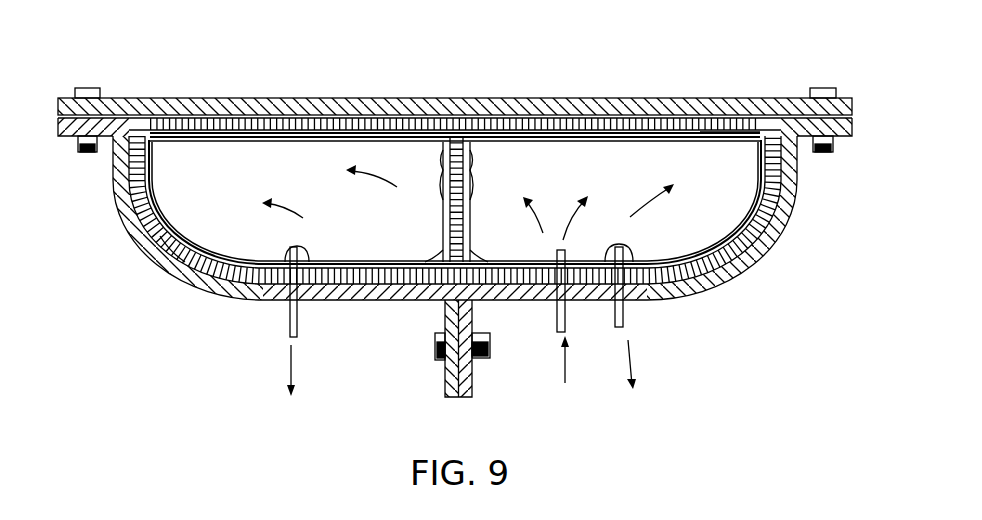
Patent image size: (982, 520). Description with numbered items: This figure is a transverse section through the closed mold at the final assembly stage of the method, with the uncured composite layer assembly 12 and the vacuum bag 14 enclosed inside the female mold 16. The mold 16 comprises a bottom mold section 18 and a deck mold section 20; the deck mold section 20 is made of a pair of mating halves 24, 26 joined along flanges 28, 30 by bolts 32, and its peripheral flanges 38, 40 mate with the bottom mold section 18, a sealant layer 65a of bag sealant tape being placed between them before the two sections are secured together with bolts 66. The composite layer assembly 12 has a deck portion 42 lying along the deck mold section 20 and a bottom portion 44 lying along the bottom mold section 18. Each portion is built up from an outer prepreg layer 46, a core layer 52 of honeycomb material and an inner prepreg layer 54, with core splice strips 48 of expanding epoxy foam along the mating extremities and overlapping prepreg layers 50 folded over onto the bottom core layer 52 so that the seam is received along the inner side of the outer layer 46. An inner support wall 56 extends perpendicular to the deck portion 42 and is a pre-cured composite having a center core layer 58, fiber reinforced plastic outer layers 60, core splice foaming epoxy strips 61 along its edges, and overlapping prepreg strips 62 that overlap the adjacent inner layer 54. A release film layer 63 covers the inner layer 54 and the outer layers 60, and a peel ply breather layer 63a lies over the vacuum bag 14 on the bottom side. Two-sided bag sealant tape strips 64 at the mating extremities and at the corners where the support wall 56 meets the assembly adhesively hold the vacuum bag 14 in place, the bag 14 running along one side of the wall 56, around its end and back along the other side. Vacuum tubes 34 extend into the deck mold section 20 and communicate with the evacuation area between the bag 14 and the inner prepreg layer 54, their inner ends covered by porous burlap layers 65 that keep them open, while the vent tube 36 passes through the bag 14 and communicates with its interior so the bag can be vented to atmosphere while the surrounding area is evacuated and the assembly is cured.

The composite layer assembly 12 is at (205, 292).
The vacuum bag 14 is at (188, 232).
The female mold 16 is at (112, 206).
The bottom mold section 18 is at (342, 100).
The deck mold section 20 is at (253, 302).
The mating half 24 is at (400, 302).
The mating half 26 is at (522, 302).
The flange 28 is at (445, 392).
The flange 30 is at (473, 388).
The bolts 32 is at (436, 345).
The vacuum tubes 34 is at (298, 328).
The vent tube 36 is at (565, 332).
The peripheral flange 38 is at (62, 140).
The peripheral flange 40 is at (838, 138).
The deck portion 42 is at (703, 298).
The bottom portion 44 is at (580, 132).
The outer layer of fiber reinforced plastic material 46 is at (552, 130).
The core splice material strips 48 is at (773, 130).
The overlapping layers of uncured prepreg 50 is at (742, 122).
The core layer 52 is at (395, 128).
The inner prepreg layer 54 is at (432, 130).
The inner support wall 56 is at (472, 186).
The center core layer 58 is at (441, 165).
The fiber reinforced plastic outer layers 60 is at (480, 210).
The core splice foaming epoxy strips 61 is at (470, 130).
The overlapping prepreg layers 62 is at (432, 255).
The release film layer 63 is at (285, 140).
The breather layer 63a is at (333, 116).
The vacuum bag sealant tape strips 64 is at (200, 130).
The porous layers 65 is at (300, 250).
The sealant layer 65a is at (118, 114).
The bolts 66 is at (88, 88).